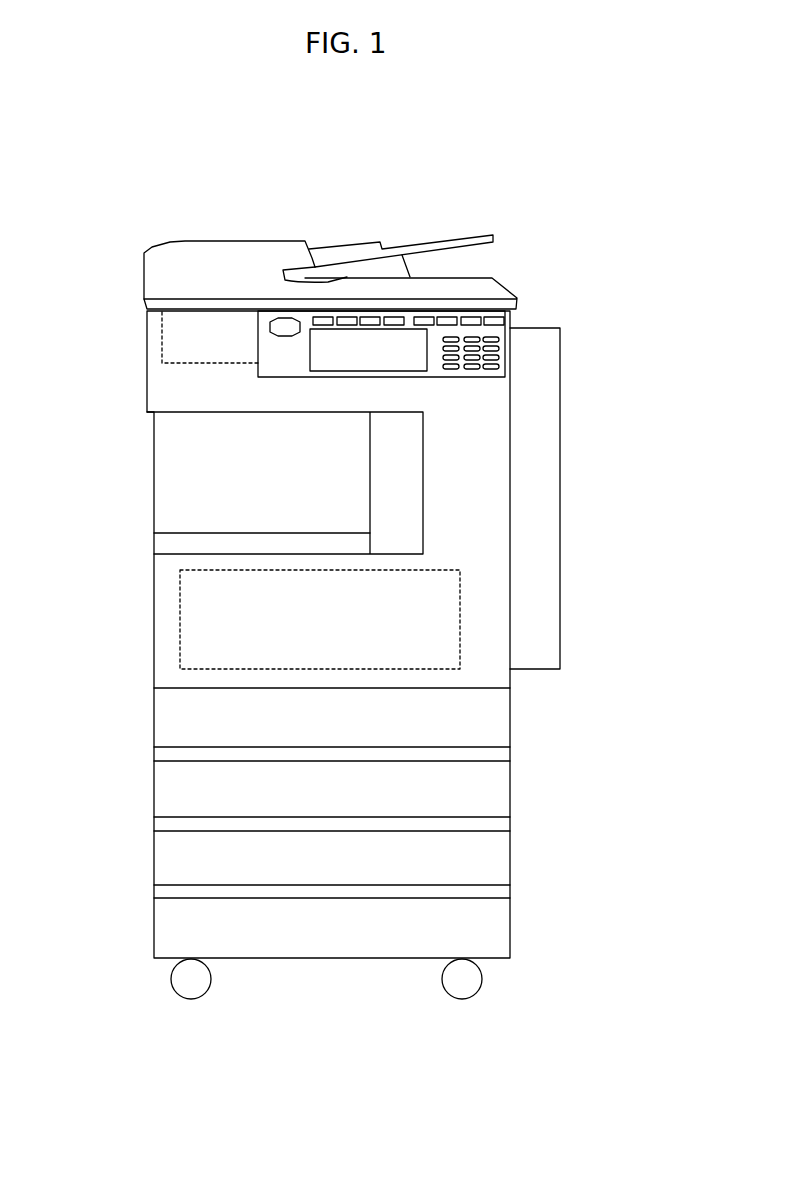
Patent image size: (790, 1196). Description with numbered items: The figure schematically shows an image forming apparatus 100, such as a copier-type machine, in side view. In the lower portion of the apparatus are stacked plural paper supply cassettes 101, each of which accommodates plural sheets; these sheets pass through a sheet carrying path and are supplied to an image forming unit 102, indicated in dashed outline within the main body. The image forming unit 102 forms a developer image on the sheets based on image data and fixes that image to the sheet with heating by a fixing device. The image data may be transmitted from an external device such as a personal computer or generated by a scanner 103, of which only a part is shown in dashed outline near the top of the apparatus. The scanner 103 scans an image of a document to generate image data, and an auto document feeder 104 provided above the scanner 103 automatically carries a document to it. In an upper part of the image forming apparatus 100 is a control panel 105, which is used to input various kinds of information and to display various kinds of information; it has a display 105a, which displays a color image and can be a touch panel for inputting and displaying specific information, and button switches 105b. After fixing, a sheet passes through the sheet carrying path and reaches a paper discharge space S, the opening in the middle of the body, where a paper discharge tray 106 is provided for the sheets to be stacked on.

The image forming apparatus 100 is at (590, 284).
The paper supply cassette 101 is at (350, 733).
The image forming unit 102 is at (180, 604).
The scanner 103 is at (148, 335).
The auto document feeder 104 is at (245, 267).
The control panel 105 is at (447, 381).
The display 105a is at (392, 357).
The button switches 105b is at (482, 370).
The paper discharge tray 106 is at (168, 546).
The paper discharge space S is at (237, 468).